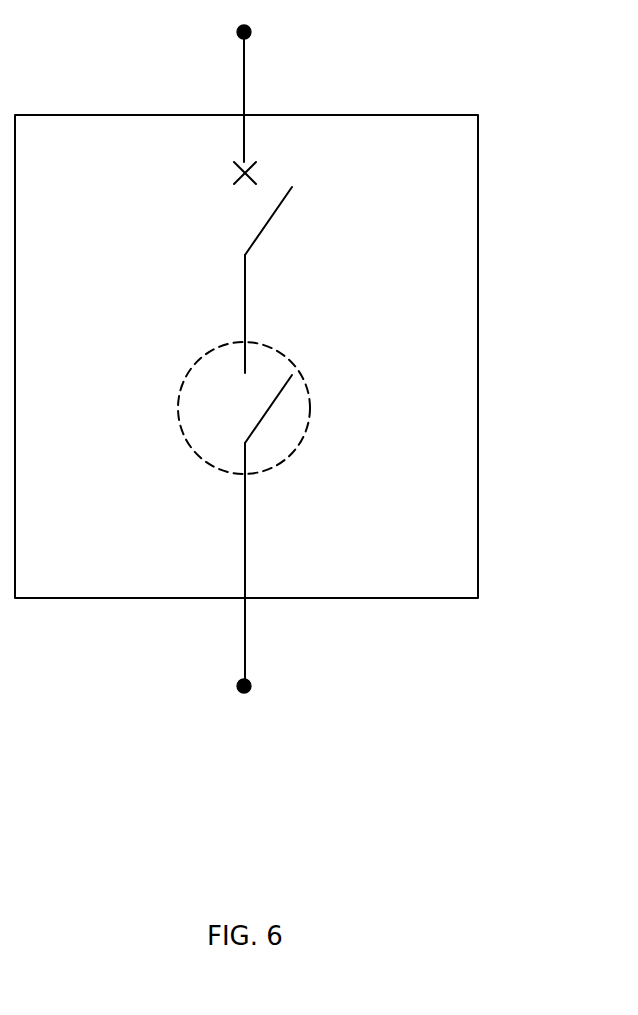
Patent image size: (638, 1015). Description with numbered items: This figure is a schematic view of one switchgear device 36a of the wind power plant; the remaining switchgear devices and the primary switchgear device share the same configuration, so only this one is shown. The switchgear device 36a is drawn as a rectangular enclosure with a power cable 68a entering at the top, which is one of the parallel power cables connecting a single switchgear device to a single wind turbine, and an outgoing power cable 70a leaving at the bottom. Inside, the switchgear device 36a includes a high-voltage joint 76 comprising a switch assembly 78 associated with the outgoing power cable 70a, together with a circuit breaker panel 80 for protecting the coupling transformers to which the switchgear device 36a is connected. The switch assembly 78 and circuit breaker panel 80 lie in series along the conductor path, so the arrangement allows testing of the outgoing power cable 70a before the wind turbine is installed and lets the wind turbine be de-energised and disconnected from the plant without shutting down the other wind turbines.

The switchgear device 36a is at (440, 114).
The power cable 68a is at (246, 48).
The outgoing power cable 70a is at (243, 633).
The high-voltage joint 76 is at (178, 322).
The switch assembly 78 is at (197, 453).
The circuit breaker panel 80 is at (308, 225).